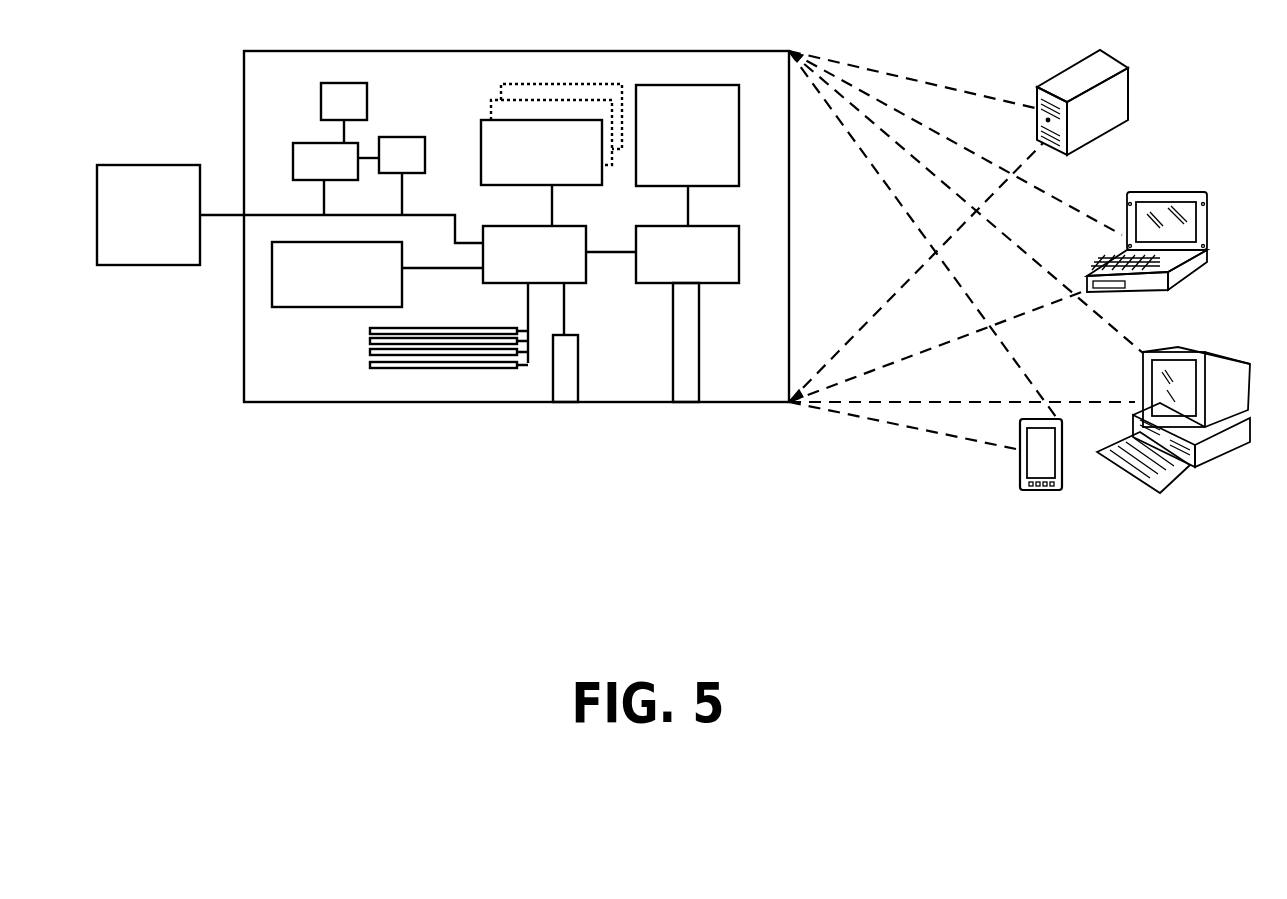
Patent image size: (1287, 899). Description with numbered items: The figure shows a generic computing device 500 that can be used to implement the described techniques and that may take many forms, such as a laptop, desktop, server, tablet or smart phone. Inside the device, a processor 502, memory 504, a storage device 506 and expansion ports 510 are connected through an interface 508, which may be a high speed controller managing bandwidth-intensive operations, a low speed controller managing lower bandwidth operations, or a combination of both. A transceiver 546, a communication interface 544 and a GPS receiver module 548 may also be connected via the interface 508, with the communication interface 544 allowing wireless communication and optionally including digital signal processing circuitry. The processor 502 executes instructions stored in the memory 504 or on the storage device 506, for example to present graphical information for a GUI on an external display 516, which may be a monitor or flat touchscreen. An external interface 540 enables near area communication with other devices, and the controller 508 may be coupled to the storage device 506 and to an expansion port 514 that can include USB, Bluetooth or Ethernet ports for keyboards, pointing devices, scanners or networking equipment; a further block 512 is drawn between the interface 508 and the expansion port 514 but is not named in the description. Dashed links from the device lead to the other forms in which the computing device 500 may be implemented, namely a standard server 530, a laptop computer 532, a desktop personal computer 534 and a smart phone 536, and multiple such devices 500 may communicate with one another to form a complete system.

The computing device 500 is at (228, 55).
The processor 502 is at (337, 274).
The memory 504 is at (551, 134).
The storage device 506 is at (687, 135).
The interface 508 is at (534, 254).
The expansion ports 510 is at (370, 349).
The network interface 512 is at (687, 254).
The expansion port 514 is at (673, 348).
The display 516 is at (148, 215).
The standard server 530 is at (1066, 78).
The laptop computer 532 is at (1180, 192).
The desktop computer 534 is at (1244, 363).
The smart phone 536 is at (1020, 473).
The external interface 540 is at (578, 336).
The communication interface 544 is at (325, 161).
The transceiver 546 is at (321, 100).
The GPS receiver module 548 is at (402, 137).